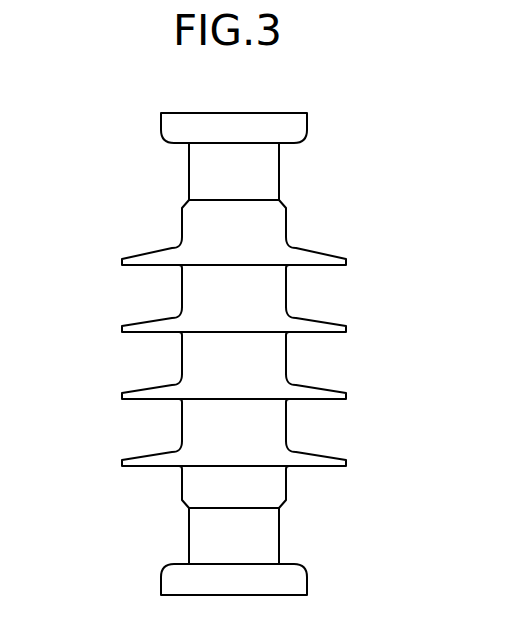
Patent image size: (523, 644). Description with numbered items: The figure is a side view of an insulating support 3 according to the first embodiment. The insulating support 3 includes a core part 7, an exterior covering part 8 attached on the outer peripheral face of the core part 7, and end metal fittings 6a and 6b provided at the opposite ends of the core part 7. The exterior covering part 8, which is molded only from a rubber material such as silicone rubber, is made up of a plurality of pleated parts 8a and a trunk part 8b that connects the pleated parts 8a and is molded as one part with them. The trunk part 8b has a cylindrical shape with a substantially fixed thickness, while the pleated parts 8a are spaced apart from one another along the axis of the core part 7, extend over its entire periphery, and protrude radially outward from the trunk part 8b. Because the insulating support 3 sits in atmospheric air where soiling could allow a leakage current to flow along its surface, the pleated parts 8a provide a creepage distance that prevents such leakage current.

The insulating support 3 is at (75, 244).
The end metal fitting 6a is at (307, 125).
The end metal fitting 6b is at (307, 577).
The core part 7 is at (279, 533).
The exterior covering part 8 is at (346, 262).
The pleated part 8a is at (335, 325).
The trunk part 8b is at (286, 355).